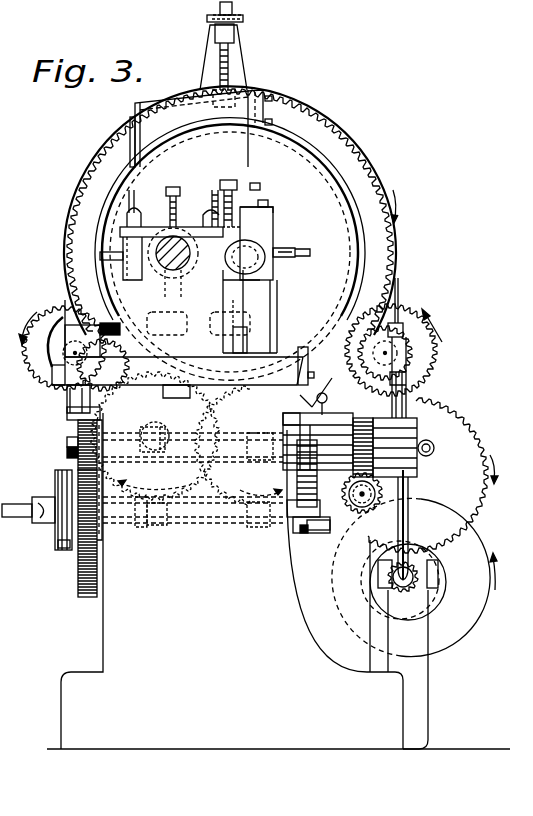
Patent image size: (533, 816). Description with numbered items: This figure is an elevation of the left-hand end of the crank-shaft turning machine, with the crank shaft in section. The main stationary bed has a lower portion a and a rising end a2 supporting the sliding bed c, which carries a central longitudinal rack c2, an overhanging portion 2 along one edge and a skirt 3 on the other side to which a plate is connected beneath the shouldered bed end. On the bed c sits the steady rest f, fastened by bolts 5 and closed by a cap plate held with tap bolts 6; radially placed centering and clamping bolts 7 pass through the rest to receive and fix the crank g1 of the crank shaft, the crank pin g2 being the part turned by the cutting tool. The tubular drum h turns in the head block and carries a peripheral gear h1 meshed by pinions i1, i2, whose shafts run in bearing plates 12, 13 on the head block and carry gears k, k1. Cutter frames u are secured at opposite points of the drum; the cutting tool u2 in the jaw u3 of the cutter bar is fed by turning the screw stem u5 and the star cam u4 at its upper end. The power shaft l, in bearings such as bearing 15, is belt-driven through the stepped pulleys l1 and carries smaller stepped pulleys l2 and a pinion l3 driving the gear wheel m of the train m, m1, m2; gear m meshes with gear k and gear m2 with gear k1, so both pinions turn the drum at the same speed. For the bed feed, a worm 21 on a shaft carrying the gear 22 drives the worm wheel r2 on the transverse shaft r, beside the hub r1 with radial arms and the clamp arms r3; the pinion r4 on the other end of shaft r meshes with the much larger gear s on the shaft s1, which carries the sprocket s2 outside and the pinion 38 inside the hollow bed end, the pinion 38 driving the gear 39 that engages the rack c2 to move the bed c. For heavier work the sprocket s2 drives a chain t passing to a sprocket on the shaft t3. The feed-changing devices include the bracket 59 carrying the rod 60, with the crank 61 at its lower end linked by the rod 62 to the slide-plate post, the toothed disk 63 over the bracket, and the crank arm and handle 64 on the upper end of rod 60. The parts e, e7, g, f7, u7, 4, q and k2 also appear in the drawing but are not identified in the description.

The lower portion of the main stationary bed a is at (278, 524).
The rising end of the bed a2 is at (281, 551).
The drum h is at (357, 170).
The peripheral gear h1 is at (363, 180).
The cutter frames u is at (201, 128).
The screw stem u5 is at (233, 60).
The star cam u4 is at (243, 17).
The cross bar e is at (171, 267).
The bracket arm e7 is at (122, 231).
The shaft section g is at (158, 268).
The crank pin g2 is at (262, 252).
The crank g1 is at (262, 273).
The steady rest f is at (278, 290).
The bracket top f7 is at (273, 214).
The tap bolts 6 is at (268, 203).
The jaw u3 is at (258, 190).
The cutting tool u2 is at (220, 180).
The threaded stem u7 is at (218, 185).
The posts 4 is at (127, 203).
The centering and clamping bolts 7 is at (177, 187).
The bolts 5 is at (237, 333).
The sliding bed c is at (177, 377).
The plate q is at (305, 347).
The overhanging portion 2 is at (288, 388).
The crank arm and handle 64 is at (323, 393).
The disk 63 is at (295, 421).
The worm wheel r2 is at (340, 405).
The hub r1 is at (412, 441).
The clamp arms r3 is at (434, 448).
The bearing plate 12 is at (394, 325).
The pinion i1 is at (407, 342).
The gear k is at (430, 354).
The gear wheel m is at (481, 447).
The worm 21 is at (370, 508).
The gear 22 is at (408, 518).
The stepped-pulleys l1 is at (414, 577).
The power shaft l is at (423, 594).
The pinion l3 is at (416, 600).
The smaller stepped-pulleys l2 is at (438, 579).
The bearing 15 is at (378, 573).
The rod 60 is at (297, 476).
The bracket 59 is at (295, 513).
The crank 61 is at (318, 533).
The rod 62 is at (310, 535).
The rack c2 is at (172, 388).
The gear 39 is at (200, 431).
The gear m1 is at (232, 508).
The pinion 38 is at (198, 525).
The gear m2 is at (170, 505).
The shaft s1 is at (147, 518).
The gear s is at (80, 574).
The shaft r is at (67, 451).
The pinion r4 is at (67, 441).
The shaft t3 is at (23, 505).
The chain t is at (65, 550).
The sprocket s2 is at (58, 545).
The pinion i2 is at (64, 330).
The pinion k2 is at (103, 365).
The gear k1 is at (30, 360).
The bearing plate 13 is at (52, 366).
The skirt 3 is at (67, 412).